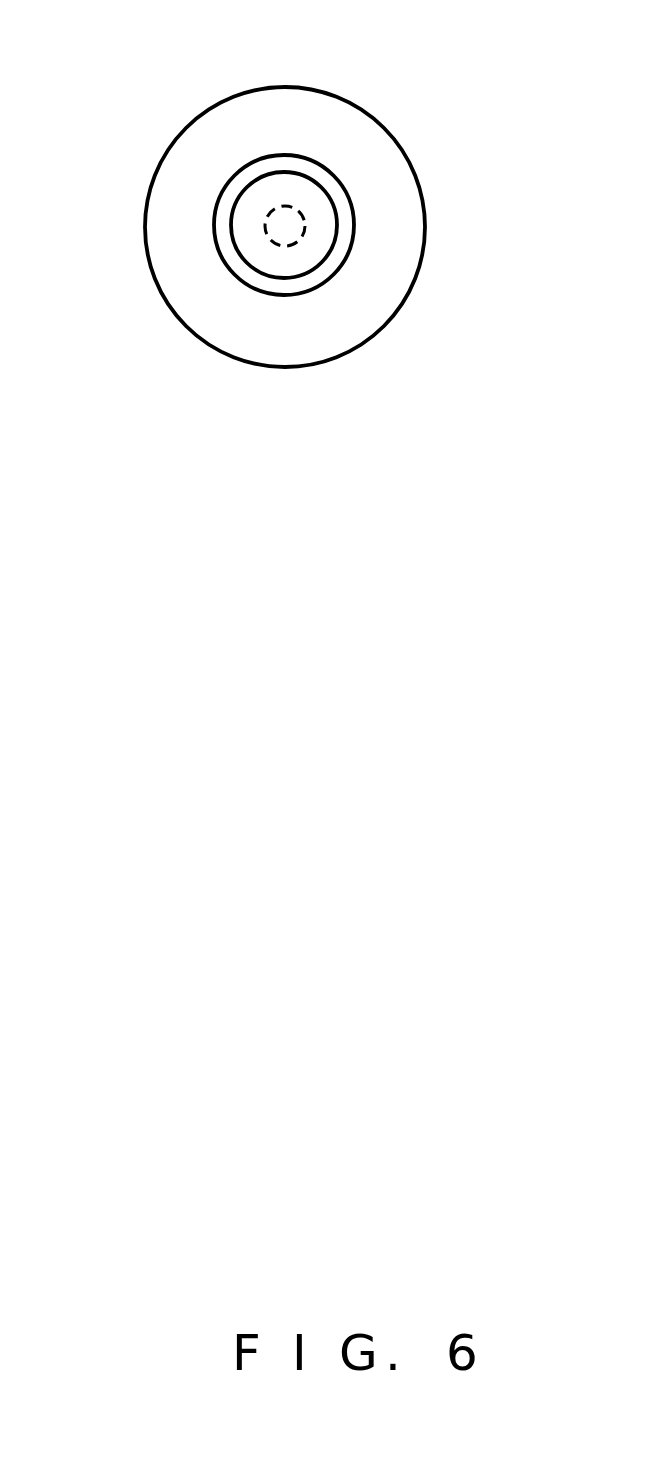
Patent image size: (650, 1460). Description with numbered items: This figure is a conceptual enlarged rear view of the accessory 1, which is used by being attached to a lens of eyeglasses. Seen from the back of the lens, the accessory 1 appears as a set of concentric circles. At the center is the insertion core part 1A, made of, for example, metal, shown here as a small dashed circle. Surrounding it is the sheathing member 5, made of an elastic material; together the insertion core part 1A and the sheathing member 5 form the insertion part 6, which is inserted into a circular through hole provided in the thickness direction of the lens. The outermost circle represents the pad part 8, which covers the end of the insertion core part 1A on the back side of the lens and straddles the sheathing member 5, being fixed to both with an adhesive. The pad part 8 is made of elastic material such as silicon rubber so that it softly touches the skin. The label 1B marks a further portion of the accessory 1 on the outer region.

The accessory 1 is at (315, 187).
The insertion core part 1A is at (412, 194).
The outer wall portion 1B is at (186, 195).
The sheathing member 5 is at (222, 244).
The insertion part 6 is at (347, 278).
The pad part 8 is at (279, 259).